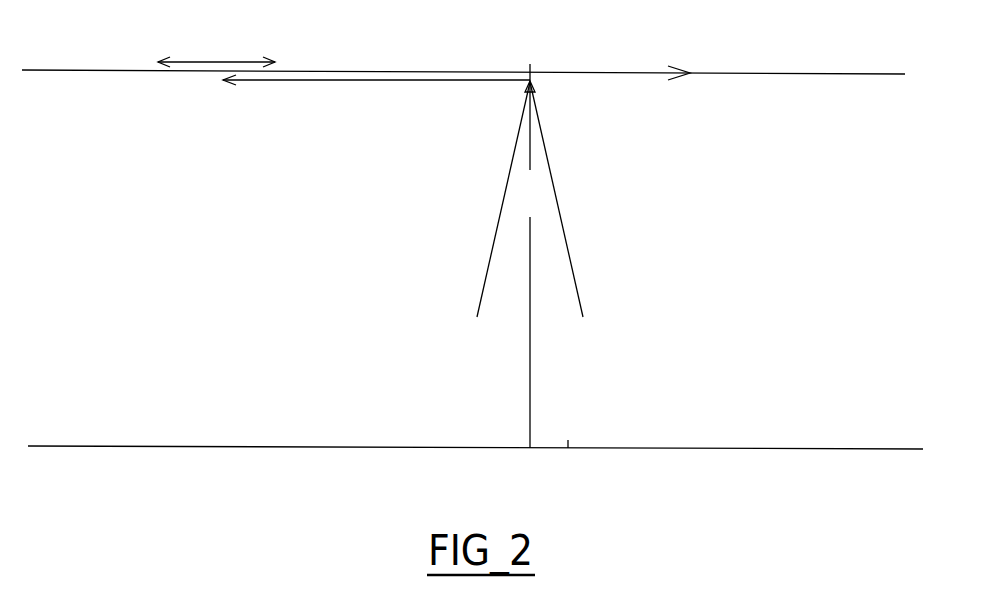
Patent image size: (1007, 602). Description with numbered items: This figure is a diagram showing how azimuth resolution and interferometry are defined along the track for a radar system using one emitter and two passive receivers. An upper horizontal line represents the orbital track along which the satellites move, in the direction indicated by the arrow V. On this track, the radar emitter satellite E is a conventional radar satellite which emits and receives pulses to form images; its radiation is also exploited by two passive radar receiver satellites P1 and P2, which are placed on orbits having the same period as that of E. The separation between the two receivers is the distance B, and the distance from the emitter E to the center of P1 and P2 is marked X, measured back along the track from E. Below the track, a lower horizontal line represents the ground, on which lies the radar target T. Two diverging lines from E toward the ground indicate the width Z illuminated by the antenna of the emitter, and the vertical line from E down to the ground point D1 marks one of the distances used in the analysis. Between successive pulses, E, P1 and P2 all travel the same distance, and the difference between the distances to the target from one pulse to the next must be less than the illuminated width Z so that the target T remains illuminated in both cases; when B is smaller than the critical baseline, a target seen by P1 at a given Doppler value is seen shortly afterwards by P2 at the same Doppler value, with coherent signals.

The radar receiver satellite P1 is at (155, 36).
The radar receiver satellite P2 is at (303, 36).
The distance between P1 and P2 B is at (216, 47).
The distance between E and the center of P1 and P2 X is at (376, 97).
The radar emitter satellite E is at (530, 242).
The velocity direction V is at (683, 59).
The width illuminated by the antenna of the emitter Z is at (530, 199).
The radar target T is at (578, 436).
The distance D1 is at (552, 482).